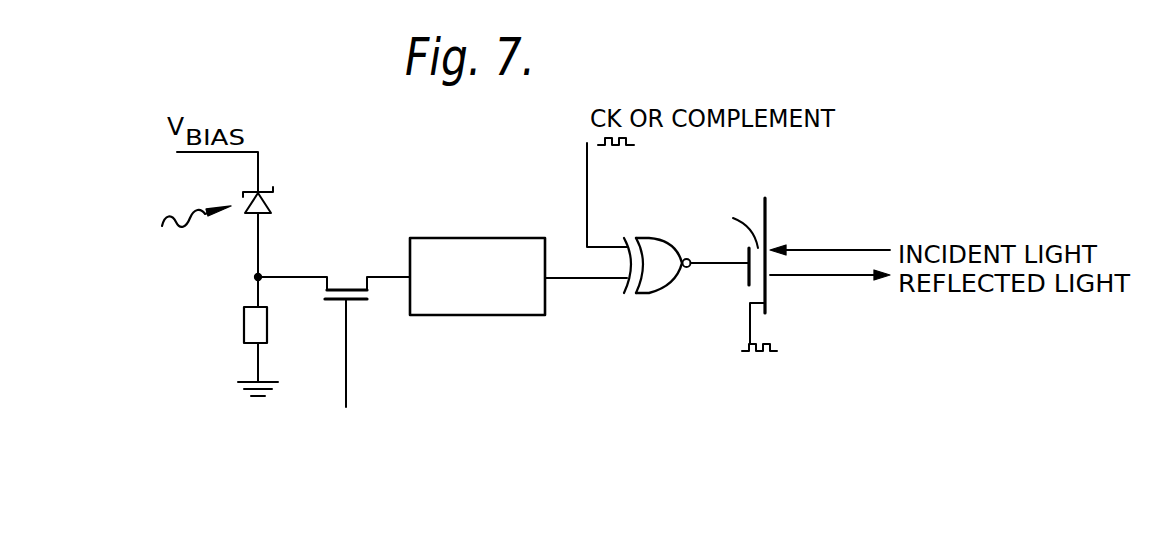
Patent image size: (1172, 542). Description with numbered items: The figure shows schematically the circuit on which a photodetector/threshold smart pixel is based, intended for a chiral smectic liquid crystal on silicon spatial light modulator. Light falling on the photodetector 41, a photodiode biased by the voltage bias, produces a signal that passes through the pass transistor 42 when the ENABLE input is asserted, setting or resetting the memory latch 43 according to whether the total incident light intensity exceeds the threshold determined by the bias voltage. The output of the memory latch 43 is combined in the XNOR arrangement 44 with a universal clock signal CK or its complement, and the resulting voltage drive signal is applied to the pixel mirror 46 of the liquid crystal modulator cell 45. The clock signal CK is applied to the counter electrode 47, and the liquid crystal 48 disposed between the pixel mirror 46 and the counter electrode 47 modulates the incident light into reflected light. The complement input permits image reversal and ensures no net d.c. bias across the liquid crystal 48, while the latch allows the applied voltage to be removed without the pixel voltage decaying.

The photodetector 41 is at (268, 196).
The pass transistor 42 is at (348, 289).
The memory latch 43 is at (440, 237).
The XNOR arrangement 44 is at (648, 290).
The liquid crystal modulator cell 45 is at (762, 229).
The pixel mirror 46 is at (747, 283).
The counter electrode 47 is at (768, 217).
The liquid crystal 48 is at (727, 225).